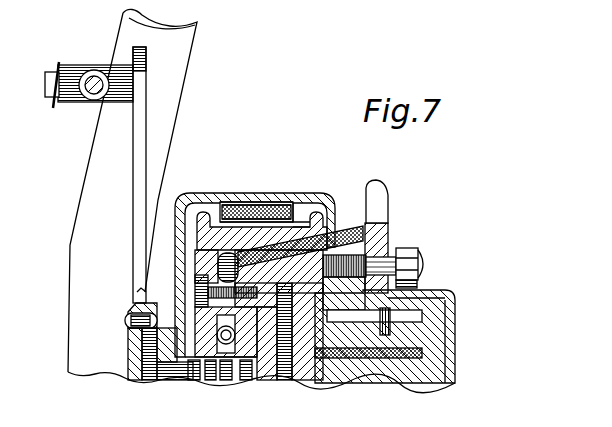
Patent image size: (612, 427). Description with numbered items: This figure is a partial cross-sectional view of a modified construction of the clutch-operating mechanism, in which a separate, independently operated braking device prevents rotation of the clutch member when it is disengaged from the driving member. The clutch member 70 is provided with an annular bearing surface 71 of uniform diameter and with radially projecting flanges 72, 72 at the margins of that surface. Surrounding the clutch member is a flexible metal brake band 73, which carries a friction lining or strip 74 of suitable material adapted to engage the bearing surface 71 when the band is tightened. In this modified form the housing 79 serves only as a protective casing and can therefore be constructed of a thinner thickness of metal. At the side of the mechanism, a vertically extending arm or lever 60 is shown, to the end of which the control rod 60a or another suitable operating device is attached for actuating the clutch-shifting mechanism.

The arm or lever 60 is at (133, 148).
The control rod 60a is at (91, 74).
The housing 79 is at (207, 192).
The radially projecting flanges 72 is at (203, 215).
The clutch member 70 is at (228, 223).
The friction lining or strip 74 is at (257, 199).
The flexible metal brake band 73 is at (268, 215).
The annular bearing surface 71 is at (277, 203).